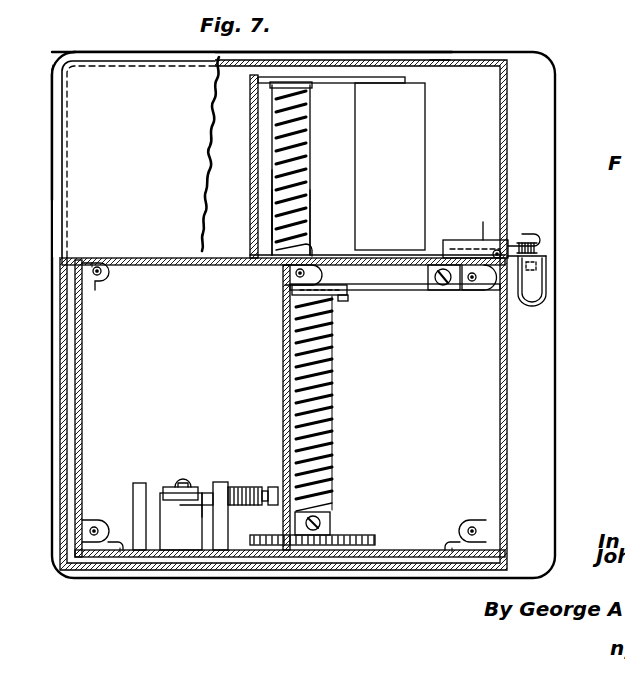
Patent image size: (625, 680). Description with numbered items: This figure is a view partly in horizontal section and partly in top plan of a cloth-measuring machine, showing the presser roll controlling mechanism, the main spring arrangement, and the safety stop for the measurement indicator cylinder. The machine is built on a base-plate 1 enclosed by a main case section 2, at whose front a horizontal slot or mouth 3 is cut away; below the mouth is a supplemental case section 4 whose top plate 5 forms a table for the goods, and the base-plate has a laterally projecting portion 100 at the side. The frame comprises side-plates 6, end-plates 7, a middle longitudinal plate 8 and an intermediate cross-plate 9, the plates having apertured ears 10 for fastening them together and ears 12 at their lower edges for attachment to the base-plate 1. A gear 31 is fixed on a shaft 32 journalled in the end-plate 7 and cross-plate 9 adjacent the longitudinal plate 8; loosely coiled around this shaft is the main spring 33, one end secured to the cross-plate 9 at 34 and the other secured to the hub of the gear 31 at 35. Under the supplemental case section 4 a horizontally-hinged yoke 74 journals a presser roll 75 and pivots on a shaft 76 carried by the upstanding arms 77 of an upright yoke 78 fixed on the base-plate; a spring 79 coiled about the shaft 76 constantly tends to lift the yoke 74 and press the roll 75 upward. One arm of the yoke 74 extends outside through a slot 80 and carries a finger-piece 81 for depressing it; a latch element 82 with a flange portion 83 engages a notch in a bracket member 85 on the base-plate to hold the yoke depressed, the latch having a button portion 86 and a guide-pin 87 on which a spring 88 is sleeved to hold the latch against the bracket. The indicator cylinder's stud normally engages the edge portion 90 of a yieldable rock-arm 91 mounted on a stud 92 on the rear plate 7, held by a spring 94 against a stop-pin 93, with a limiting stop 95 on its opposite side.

The base-plate 1 is at (390, 60).
The main case section 2 is at (60, 362).
The horizontal slot or mouth 3 is at (300, 44).
The supplemental case section 4 is at (440, 64).
The top plate 5 is at (155, 225).
The side-plates 6 is at (75, 418).
The end-plates 7 is at (397, 553).
The middle longitudinal plate 8 is at (283, 380).
The intermediate cross-plate 9 is at (395, 276).
The ears 10 is at (291, 292).
The ears 12 is at (94, 284).
The gear 31 is at (346, 546).
The shaft 32 is at (318, 418).
The spring 33 is at (330, 436).
The spring attachment to plate 34 is at (352, 294).
The spring attachment to gear hub 35 is at (322, 521).
The horizontally-hinged yoke or frame 74 is at (337, 78).
The presser roll 75 is at (405, 151).
The shaft 76 is at (311, 168).
The upstanding arms 77 is at (295, 84).
The upright yoke 78 is at (277, 203).
The spring 79 is at (311, 190).
The slot 80 is at (508, 234).
The finger-piece or button 81 is at (538, 298).
The latch element 82 is at (484, 240).
The flange portion 83 is at (472, 253).
The bracket member 85 is at (440, 292).
The finger-piece or button portion 86 is at (534, 233).
The guide-pin 87 is at (538, 267).
The spring 88 is at (536, 249).
The edge portion 90 is at (207, 500).
The yieldable stop element or rock-arm 91 is at (181, 493).
The stub-shaft or stud 92 is at (182, 544).
The stop-pin 93 is at (223, 538).
The spring 94 is at (243, 490).
The limiting stop 95 is at (135, 510).
The laterally projecting portion 100 is at (556, 445).